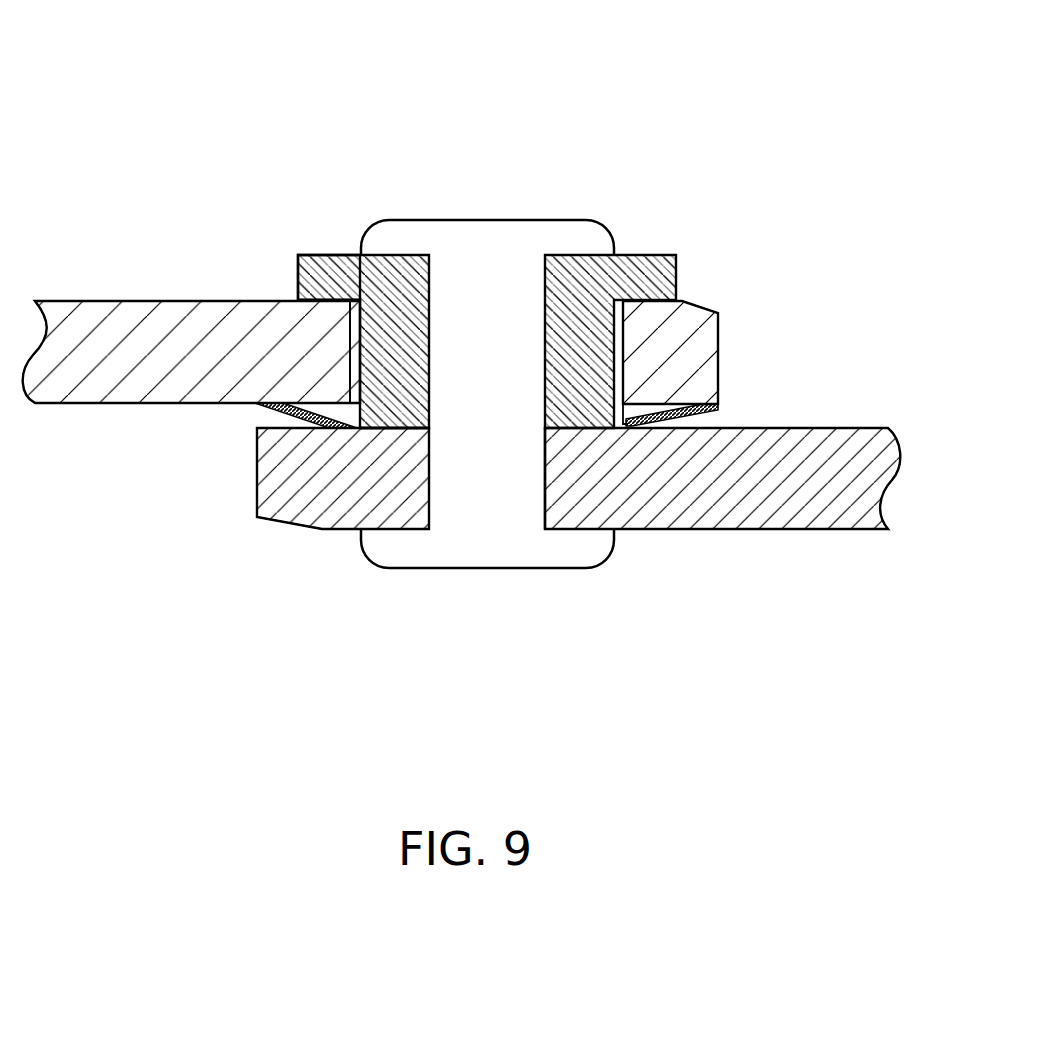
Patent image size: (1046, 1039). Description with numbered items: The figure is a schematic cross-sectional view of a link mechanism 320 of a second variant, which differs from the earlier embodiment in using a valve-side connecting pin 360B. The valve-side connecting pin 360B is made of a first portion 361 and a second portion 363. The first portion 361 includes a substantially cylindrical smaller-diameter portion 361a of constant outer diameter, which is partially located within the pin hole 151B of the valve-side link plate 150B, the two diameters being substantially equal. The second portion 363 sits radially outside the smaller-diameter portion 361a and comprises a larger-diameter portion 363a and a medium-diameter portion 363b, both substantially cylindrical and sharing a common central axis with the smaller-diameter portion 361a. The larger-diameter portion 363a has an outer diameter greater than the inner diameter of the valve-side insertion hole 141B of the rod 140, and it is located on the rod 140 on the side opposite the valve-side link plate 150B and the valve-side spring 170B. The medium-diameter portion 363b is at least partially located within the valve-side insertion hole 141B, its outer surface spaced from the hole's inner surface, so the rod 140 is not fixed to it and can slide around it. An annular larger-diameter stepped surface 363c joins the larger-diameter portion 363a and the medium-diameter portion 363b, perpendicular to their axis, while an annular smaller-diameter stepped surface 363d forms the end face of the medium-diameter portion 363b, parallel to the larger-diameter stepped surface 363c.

The link mechanism 320 is at (208, 73).
The valve-side connecting pin 360B is at (735, 72).
The first portion 361 is at (493, 220).
The smaller-diameter portion 361a is at (430, 477).
The second portion 363 is at (630, 257).
The larger-diameter portion 363a is at (298, 278).
The medium-diameter portion 363b is at (350, 340).
The larger-diameter stepped surface 363c is at (320, 301).
The smaller-diameter stepped surface 363d is at (398, 430).
The rod 140 is at (98, 300).
The valve-side insertion hole 141B is at (360, 368).
The valve-side link plate 150B is at (822, 428).
The pin hole 151B is at (432, 497).
The valve-side spring 170B is at (298, 422).